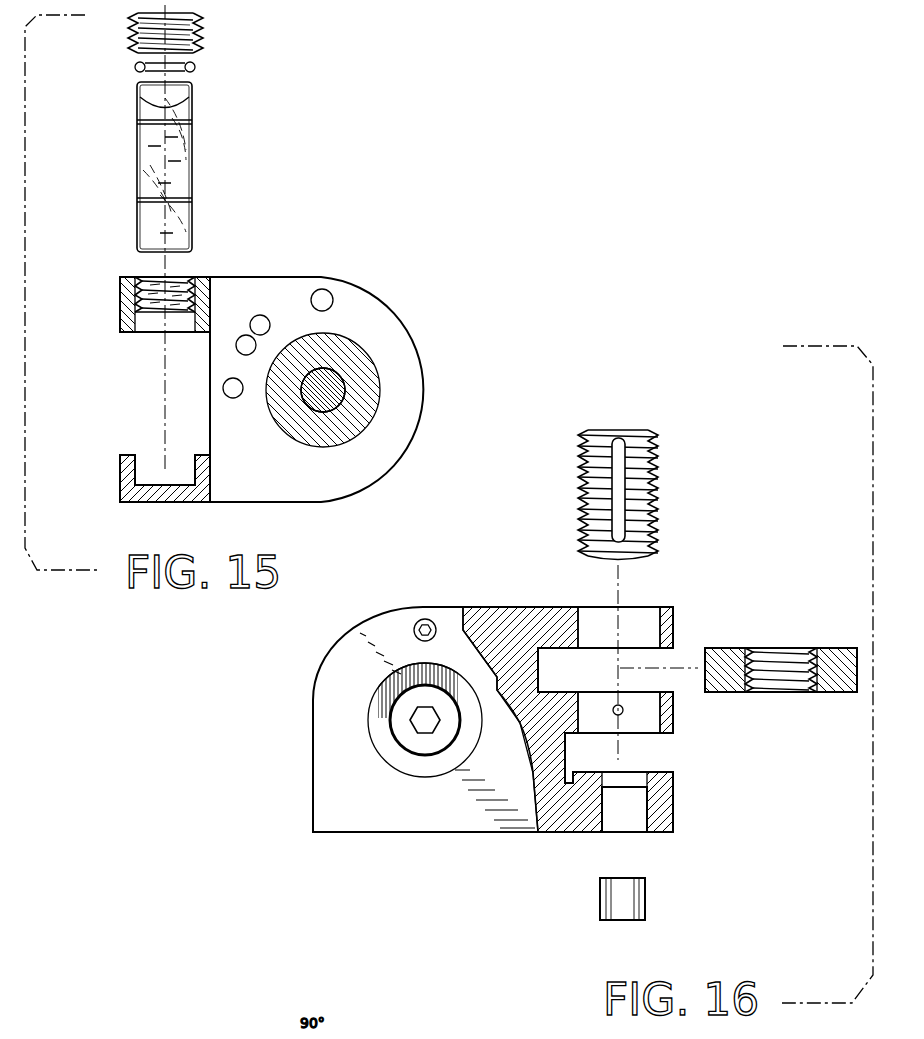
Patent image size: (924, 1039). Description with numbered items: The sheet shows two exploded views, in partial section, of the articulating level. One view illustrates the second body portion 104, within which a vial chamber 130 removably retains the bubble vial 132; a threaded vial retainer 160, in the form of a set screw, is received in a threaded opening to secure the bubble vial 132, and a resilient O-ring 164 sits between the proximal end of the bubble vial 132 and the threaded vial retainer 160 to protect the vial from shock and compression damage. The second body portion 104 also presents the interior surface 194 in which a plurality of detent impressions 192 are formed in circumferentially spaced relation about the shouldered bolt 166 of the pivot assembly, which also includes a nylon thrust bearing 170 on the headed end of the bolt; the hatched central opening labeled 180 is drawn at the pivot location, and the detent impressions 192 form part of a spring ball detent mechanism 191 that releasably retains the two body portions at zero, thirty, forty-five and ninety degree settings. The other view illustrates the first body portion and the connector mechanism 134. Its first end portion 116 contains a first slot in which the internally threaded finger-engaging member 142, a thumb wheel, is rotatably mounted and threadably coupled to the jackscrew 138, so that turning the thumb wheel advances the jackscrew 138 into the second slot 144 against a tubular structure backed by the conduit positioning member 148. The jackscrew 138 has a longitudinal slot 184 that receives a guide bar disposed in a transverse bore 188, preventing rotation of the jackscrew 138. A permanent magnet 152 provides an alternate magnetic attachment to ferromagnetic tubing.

In FIG. 15, the second body portion 104 is at (302, 363).
In FIG. 15, the first end portion 116 is at (120, 483).
In FIG. 15, the vial chamber 130 is at (190, 285).
In FIG. 15, the bubble vial 132 is at (137, 164).
In FIG. 16, the connector mechanism 134 is at (692, 454).
In FIG. 16, the jackscrew 138 is at (656, 503).
In FIG. 16, the finger-engaging member 142 is at (773, 646).
In FIG. 16, the second slot 144 is at (646, 763).
In FIG. 16, the conduit positioning member 148 is at (673, 804).
In FIG. 16, the permanent magnet 152 is at (647, 900).
In FIG. 15, the threaded vial retainer 160 is at (200, 47).
In FIG. 15, the resilient O-ring 164 is at (195, 67).
In FIG. 15, the shouldered bolt 166 is at (345, 391).
In FIG. 16, the shouldered bolt 166 is at (392, 722).
In FIG. 15, the nylon thrust bearing 170 is at (378, 373).
In FIG. 15, the bore 180 is at (377, 417).
In FIG. 16, the slot 184 is at (655, 517).
In FIG. 16, the transverse bore 188 is at (621, 714).
In FIG. 16, the spring ball detent mechanism 191 is at (425, 617).
In FIG. 15, the detent impressions 192 is at (259, 325).
In FIG. 15, the interior surface 194 is at (393, 343).